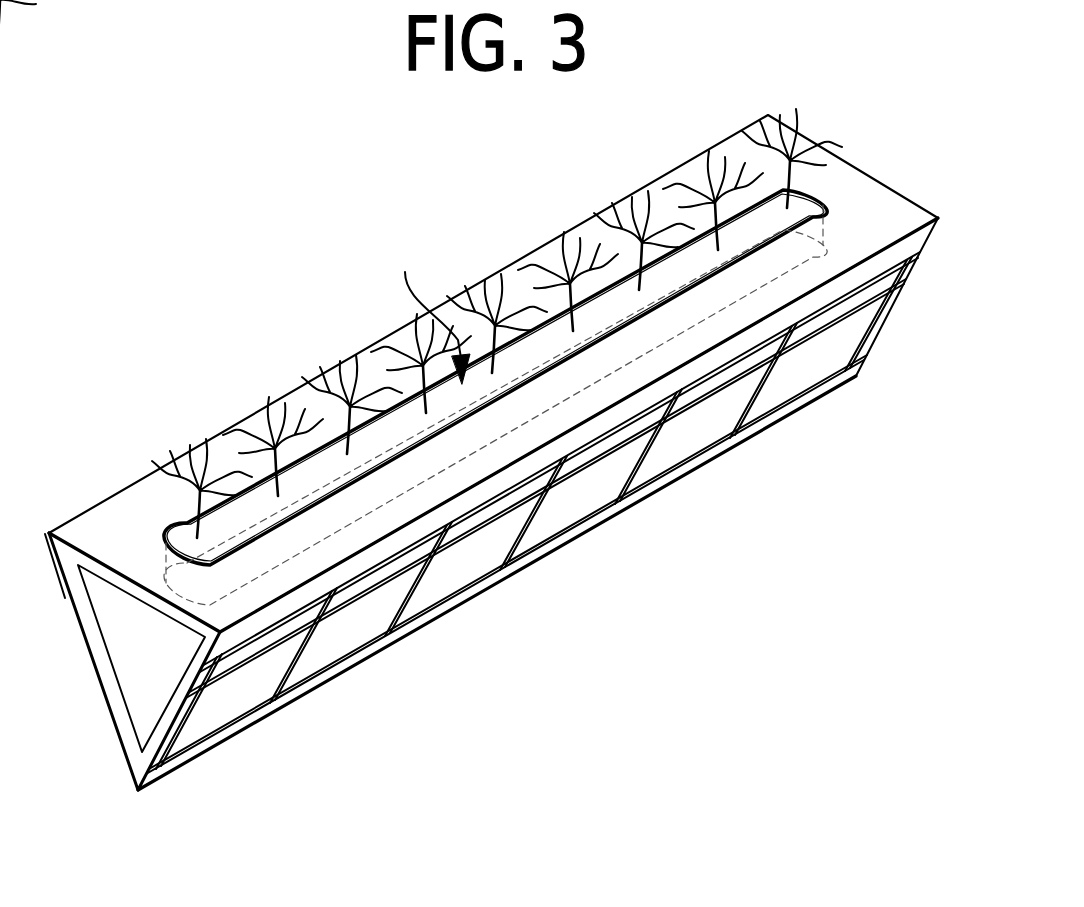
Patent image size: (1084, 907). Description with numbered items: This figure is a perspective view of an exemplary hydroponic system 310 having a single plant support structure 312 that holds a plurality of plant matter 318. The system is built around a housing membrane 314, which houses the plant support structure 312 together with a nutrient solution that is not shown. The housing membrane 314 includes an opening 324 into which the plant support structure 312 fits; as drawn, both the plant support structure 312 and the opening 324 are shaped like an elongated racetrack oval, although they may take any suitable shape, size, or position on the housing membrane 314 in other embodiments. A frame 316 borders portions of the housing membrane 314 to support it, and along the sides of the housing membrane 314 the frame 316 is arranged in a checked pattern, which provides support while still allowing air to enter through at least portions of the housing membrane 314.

The hydroponic system 310 is at (477, 395).
The plant support structure 312 is at (773, 278).
The housing membrane 314 is at (812, 377).
The frame 316 is at (687, 470).
The plant matter 318 is at (528, 284).
The opening 324 is at (428, 315).